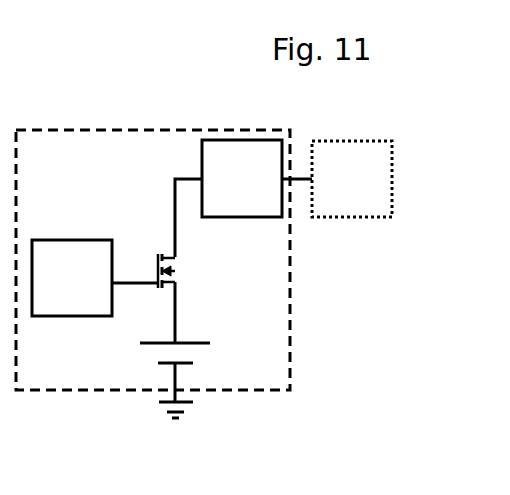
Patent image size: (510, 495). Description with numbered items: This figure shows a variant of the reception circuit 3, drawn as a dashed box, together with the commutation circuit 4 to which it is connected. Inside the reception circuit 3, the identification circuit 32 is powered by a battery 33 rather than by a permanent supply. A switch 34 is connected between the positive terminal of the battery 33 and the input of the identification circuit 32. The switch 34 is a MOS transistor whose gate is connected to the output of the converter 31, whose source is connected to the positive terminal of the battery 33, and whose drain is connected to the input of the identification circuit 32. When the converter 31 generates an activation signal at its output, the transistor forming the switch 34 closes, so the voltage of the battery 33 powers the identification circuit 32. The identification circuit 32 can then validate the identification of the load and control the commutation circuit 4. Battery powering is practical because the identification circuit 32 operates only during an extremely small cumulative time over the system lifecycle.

The reception circuit 3 is at (152, 127).
The commutation circuit 4 is at (345, 192).
The converter 31 is at (56, 293).
The identification circuit 32 is at (228, 192).
The battery 33 is at (160, 363).
The switch 34 is at (158, 257).